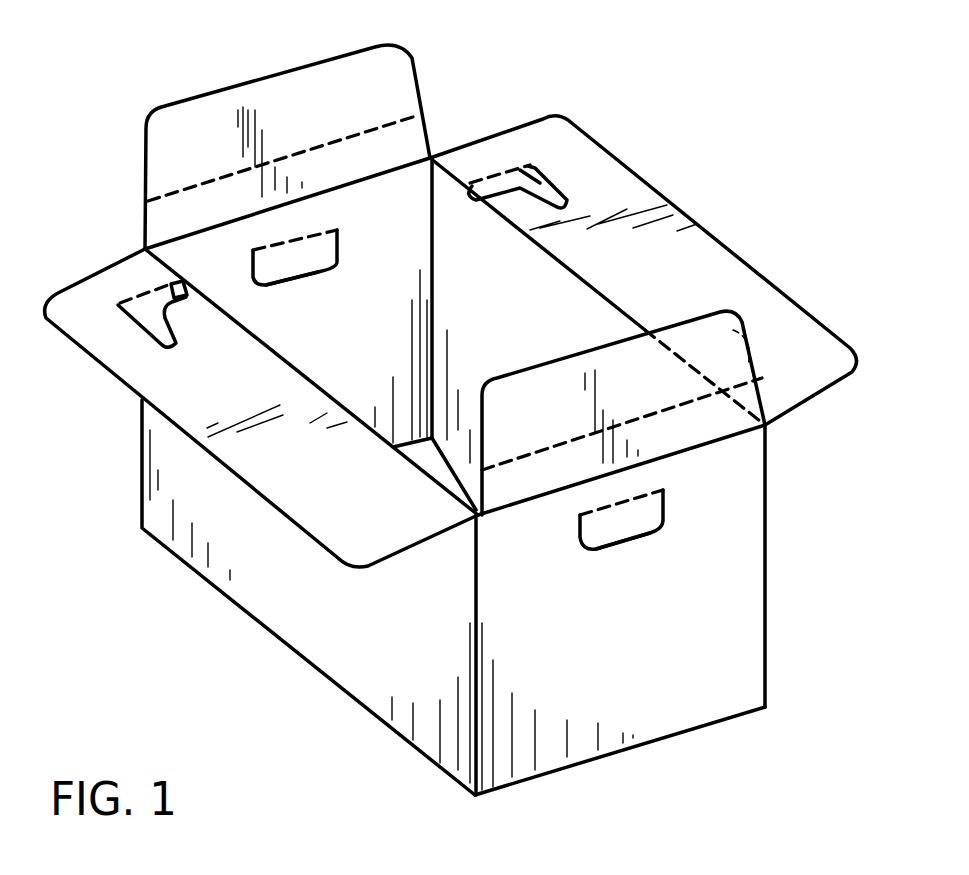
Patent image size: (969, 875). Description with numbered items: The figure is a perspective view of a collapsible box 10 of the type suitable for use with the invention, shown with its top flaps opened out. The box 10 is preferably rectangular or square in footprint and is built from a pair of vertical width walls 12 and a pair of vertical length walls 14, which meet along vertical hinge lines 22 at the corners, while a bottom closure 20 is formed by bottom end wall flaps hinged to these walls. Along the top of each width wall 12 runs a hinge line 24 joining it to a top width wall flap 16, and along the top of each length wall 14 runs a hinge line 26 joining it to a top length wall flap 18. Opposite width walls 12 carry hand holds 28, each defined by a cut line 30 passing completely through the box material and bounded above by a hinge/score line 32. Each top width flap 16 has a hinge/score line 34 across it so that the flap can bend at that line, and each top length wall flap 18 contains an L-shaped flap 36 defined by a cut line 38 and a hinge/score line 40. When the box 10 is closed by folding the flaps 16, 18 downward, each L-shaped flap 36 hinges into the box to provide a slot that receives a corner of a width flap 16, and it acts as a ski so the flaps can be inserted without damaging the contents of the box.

The collapsible box 10 is at (187, 603).
The vertical width wall 12 is at (380, 213).
The vertical length wall 14 is at (541, 319).
The top width wall flap 16 is at (207, 120).
The top length wall flap 18 is at (722, 240).
The bottom closure 20 is at (465, 486).
The vertical hinge line 22 is at (477, 743).
The hinge line 24 is at (190, 234).
The hinge line 26 is at (598, 291).
The hand hold 28 is at (313, 267).
The cut line 30 is at (312, 268).
The hinge/score line 32 is at (287, 241).
The hinge/score line 34 is at (315, 148).
The L-shaped flap 36 is at (140, 318).
The cut line 38 is at (600, 181).
The hinge/score line 40 is at (505, 172).